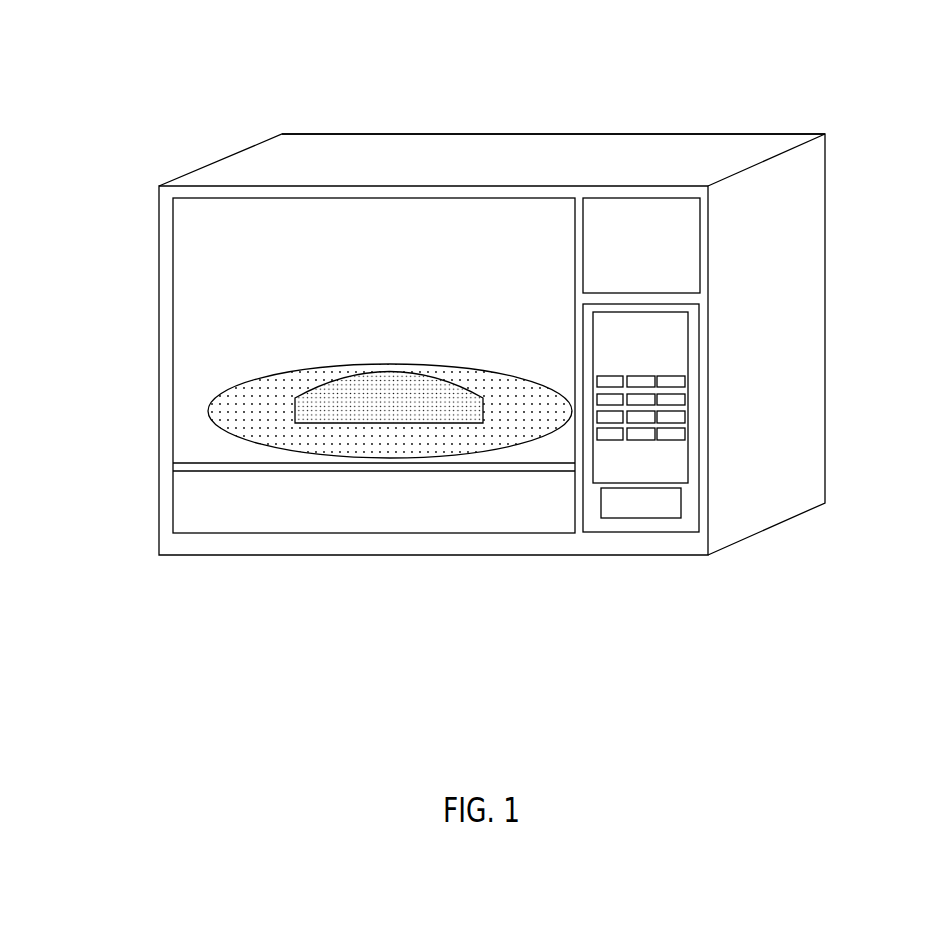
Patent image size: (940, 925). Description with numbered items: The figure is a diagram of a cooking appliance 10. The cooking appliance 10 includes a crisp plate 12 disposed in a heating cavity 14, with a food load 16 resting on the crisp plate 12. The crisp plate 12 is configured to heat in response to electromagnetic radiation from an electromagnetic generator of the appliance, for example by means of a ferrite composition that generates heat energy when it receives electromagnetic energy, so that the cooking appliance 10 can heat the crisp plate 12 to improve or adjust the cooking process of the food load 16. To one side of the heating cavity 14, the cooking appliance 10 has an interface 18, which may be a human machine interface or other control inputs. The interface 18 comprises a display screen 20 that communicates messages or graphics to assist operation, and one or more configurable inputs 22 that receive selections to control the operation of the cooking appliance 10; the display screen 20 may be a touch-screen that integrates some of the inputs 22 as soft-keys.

The cooking appliance 10 is at (722, 68).
The crisp plate 12 is at (307, 170).
The heating cavity 14 is at (195, 282).
The food load 16 is at (353, 390).
The interface 18 is at (724, 301).
The display screen 20 is at (684, 240).
The configurable inputs 22 is at (686, 381).